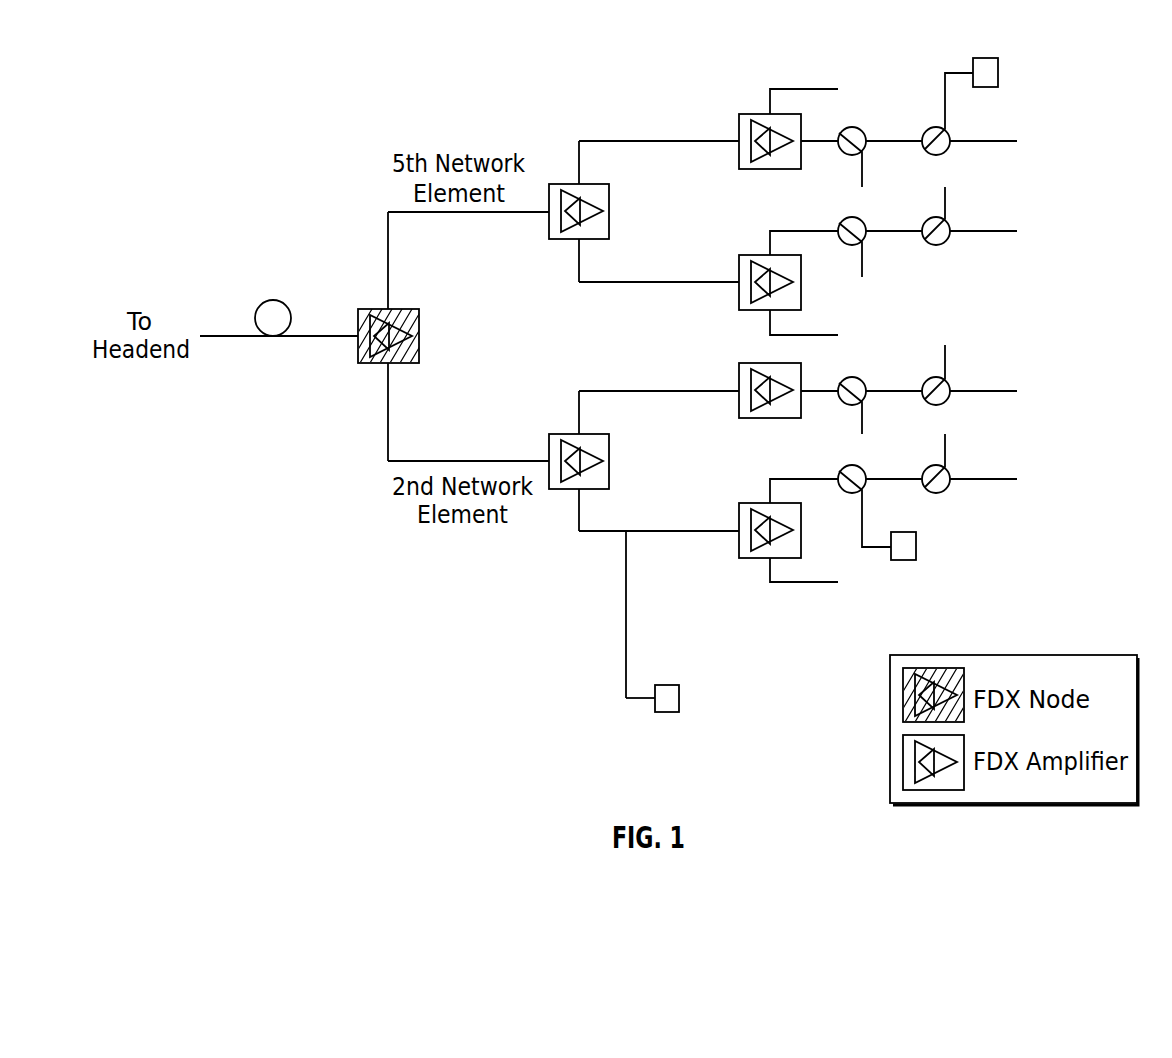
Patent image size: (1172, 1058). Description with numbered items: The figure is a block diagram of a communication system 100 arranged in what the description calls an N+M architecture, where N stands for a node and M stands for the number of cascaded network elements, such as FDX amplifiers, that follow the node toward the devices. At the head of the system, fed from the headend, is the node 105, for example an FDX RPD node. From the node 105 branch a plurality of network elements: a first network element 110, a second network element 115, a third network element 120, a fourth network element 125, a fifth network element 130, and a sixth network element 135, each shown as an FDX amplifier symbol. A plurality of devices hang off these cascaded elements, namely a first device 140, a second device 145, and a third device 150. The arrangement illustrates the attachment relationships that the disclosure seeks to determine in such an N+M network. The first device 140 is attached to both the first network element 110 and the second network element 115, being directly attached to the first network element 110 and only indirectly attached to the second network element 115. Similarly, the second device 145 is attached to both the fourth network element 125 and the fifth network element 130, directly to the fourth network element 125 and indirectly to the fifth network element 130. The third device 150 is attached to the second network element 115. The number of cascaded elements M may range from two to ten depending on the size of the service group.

The communication system 100 is at (274, 98).
The node 105 is at (381, 308).
The first network element 110 is at (739, 521).
The second network element 115 is at (572, 489).
The third network element 120 is at (739, 382).
The fourth network element 125 is at (739, 133).
The fifth network element 130 is at (570, 183).
The sixth network element 135 is at (739, 271).
The first device 140 is at (903, 561).
The second device 145 is at (986, 88).
The third device 150 is at (667, 713).